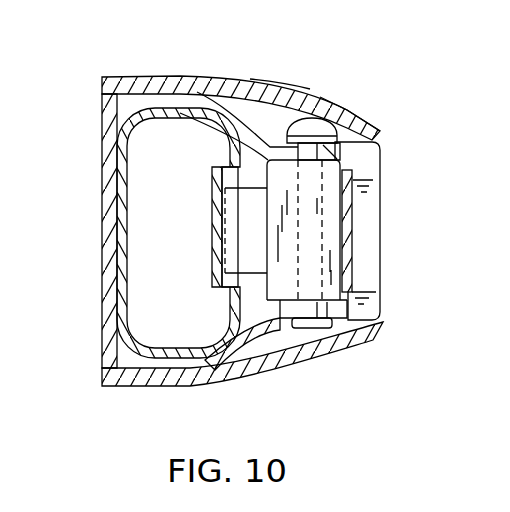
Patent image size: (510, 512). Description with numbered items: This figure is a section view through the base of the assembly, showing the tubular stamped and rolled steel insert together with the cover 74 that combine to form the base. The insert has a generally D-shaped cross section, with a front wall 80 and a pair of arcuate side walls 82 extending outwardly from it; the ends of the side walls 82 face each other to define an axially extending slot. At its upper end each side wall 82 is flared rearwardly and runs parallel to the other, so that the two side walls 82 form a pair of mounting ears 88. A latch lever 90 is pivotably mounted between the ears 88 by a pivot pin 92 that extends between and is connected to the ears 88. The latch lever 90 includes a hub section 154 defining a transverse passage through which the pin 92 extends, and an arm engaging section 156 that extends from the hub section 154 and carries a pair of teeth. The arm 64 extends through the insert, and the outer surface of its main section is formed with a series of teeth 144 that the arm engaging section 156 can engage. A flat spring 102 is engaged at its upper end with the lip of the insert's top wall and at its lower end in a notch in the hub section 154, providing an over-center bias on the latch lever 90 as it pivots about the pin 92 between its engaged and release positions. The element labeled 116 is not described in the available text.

The arm 64 is at (127, 118).
The cover 74 is at (278, 397).
The front wall 80 is at (102, 174).
The arcuate side walls 82 is at (229, 105).
The mounting ears 88 is at (292, 110).
The latch lever 90 is at (411, 182).
The pivot pin 92 is at (337, 103).
The flat spring 102 is at (366, 232).
The rib 116 is at (280, 90).
The teeth 144 is at (240, 382).
The hub section 154 is at (280, 292).
The arm engaging section 156 is at (252, 277).